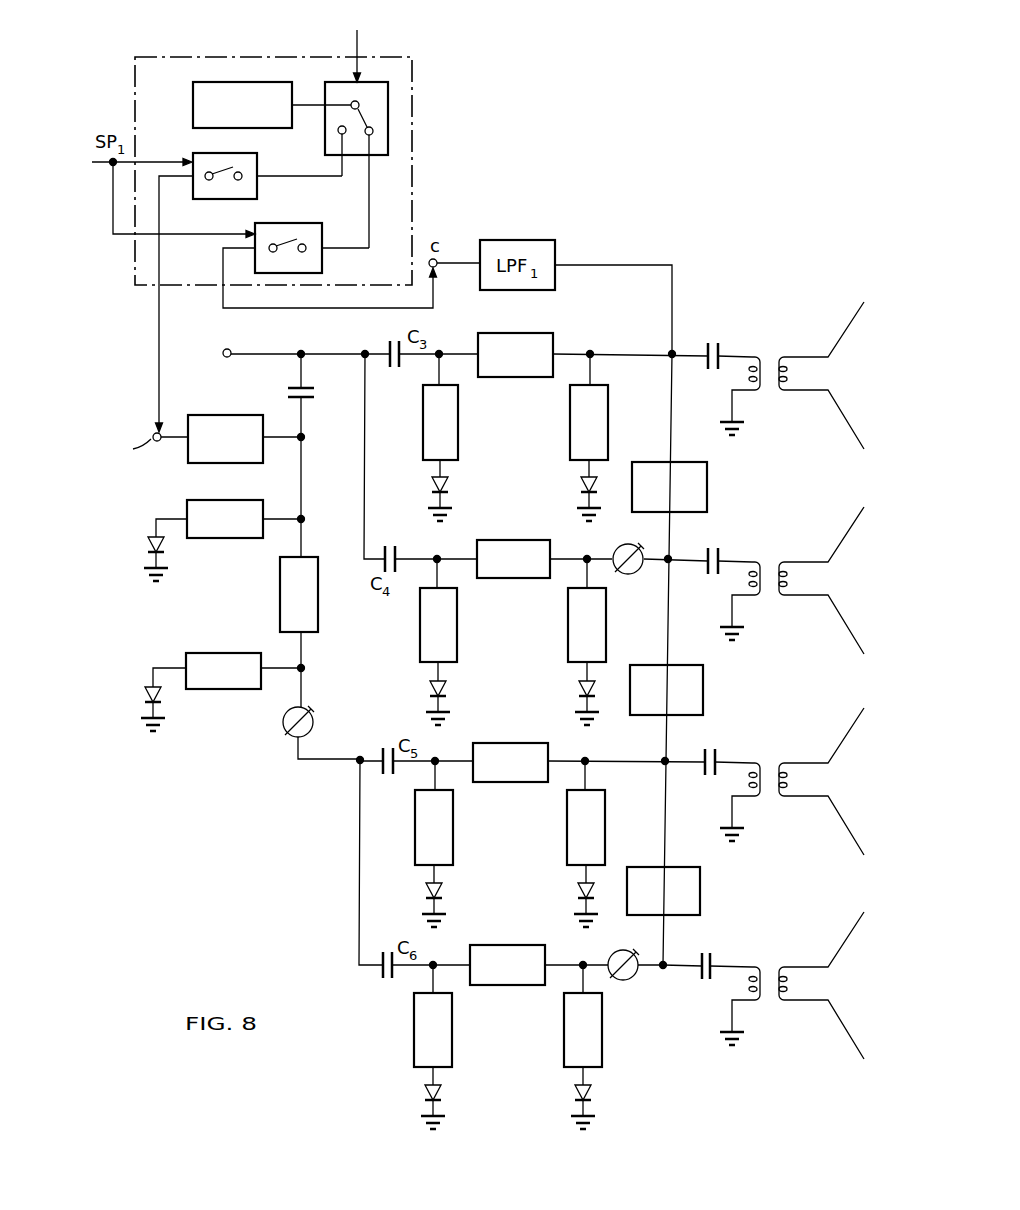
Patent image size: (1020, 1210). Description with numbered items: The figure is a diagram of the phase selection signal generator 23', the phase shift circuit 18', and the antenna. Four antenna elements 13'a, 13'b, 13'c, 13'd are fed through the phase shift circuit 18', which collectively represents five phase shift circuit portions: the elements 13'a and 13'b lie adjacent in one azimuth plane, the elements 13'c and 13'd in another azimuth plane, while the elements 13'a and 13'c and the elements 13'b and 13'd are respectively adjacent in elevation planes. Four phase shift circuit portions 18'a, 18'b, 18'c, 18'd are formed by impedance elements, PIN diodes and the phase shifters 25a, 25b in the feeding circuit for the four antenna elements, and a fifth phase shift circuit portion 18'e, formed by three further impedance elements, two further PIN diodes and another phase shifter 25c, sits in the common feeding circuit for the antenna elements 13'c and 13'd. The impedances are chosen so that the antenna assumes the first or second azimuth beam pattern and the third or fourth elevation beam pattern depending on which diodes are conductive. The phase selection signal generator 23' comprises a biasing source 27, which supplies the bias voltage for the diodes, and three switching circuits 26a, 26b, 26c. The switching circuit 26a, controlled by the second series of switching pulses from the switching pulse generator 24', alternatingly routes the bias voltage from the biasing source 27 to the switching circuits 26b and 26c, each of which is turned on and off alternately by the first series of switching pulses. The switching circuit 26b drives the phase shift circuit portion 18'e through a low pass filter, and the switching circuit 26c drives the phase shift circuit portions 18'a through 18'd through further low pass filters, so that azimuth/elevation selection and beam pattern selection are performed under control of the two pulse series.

The phase selection signal generator 23' is at (386, 171).
The switching pulse generator 24' is at (357, 41).
The biasing source 27 is at (192, 92).
The switching circuit 26a is at (325, 135).
The switching circuit 26b is at (243, 200).
The switching circuit 26c is at (288, 223).
The phase shift circuit 18' is at (680, 569).
The phase shift circuit portion 18'a is at (515, 427).
The phase shift circuit portion 18'b is at (513, 632).
The phase shift circuit portion 18'c is at (510, 835).
The phase shift circuit portion 18'd is at (518, 1037).
The phase shift circuit portion 18'e is at (226, 542).
The phase shifter 25a is at (640, 572).
The phase shifter 25b is at (636, 977).
The phase shifter 25c is at (283, 715).
The antenna element 13'a is at (792, 383).
The antenna element 13'b is at (792, 580).
The antenna element 13'c is at (792, 784).
The antenna element 13'd is at (792, 990).